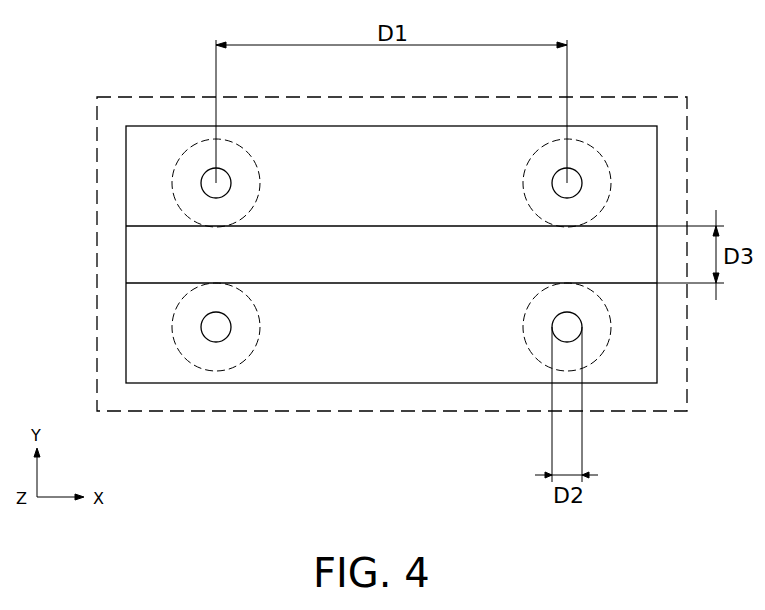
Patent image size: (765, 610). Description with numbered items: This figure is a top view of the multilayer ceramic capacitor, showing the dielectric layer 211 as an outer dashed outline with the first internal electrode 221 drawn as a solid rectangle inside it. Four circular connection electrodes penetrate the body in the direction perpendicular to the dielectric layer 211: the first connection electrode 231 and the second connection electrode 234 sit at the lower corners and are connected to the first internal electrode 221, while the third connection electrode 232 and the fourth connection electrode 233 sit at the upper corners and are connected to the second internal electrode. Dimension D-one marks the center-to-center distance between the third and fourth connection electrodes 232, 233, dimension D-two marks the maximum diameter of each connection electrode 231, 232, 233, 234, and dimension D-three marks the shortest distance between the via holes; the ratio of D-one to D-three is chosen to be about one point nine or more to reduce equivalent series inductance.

The dielectric layer 211 is at (335, 397).
The first internal electrode 221 is at (413, 367).
The first connection electrode 231 is at (201, 330).
The third connection electrode 232 is at (201, 183).
The fourth connection electrode 233 is at (582, 183).
The second connection electrode 234 is at (582, 330).